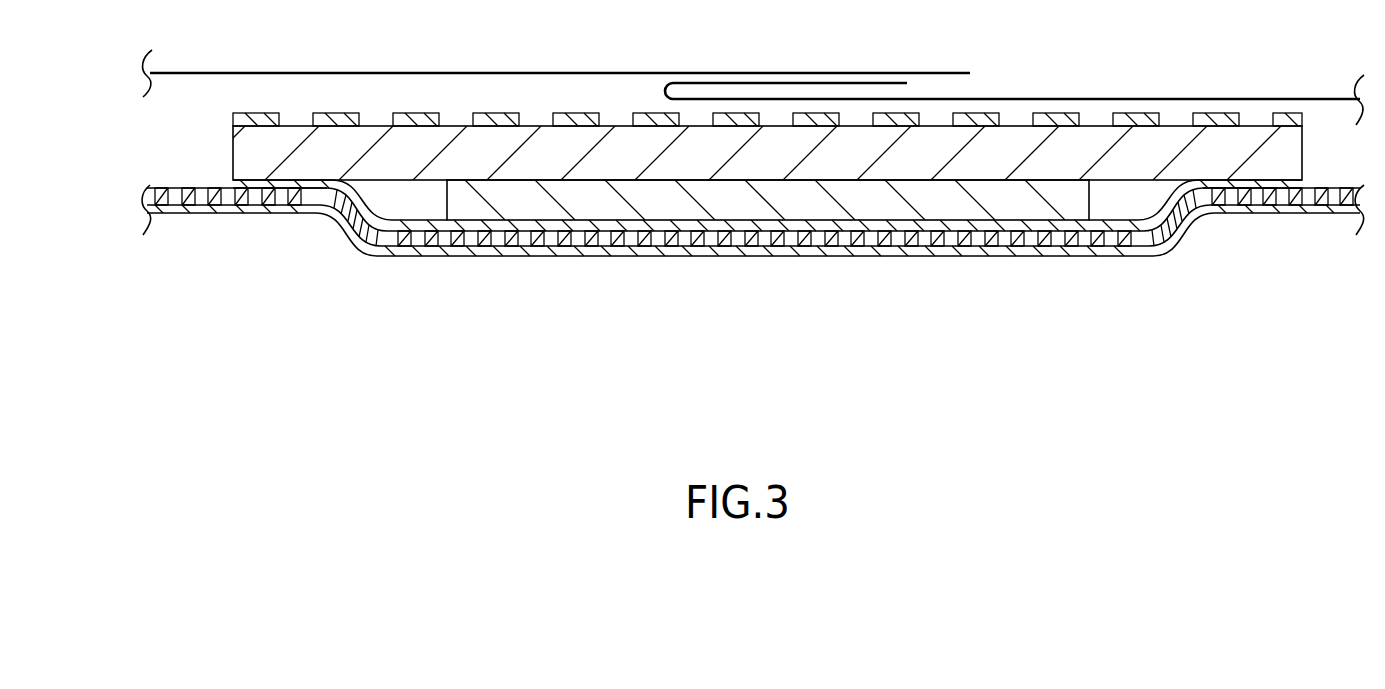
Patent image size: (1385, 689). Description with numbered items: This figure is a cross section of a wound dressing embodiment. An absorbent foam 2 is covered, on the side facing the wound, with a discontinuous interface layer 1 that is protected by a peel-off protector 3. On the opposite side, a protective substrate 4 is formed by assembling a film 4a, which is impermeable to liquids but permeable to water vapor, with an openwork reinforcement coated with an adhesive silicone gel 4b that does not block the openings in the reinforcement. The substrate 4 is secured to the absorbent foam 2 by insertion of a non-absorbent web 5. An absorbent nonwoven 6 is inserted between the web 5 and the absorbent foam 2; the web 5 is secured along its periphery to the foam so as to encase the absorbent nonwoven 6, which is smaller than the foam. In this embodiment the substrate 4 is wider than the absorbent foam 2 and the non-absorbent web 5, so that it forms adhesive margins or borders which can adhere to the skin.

The discontinuous interface layer 1 is at (496, 108).
The absorbent foam 2 is at (1104, 155).
The peel-off protector 3 is at (950, 72).
The substrate 4 is at (126, 191).
The film 4a is at (186, 213).
The adhesive silicone gel 4b is at (183, 189).
The non-absorbent web 5 is at (985, 225).
The absorbent nonwoven 6 is at (933, 200).